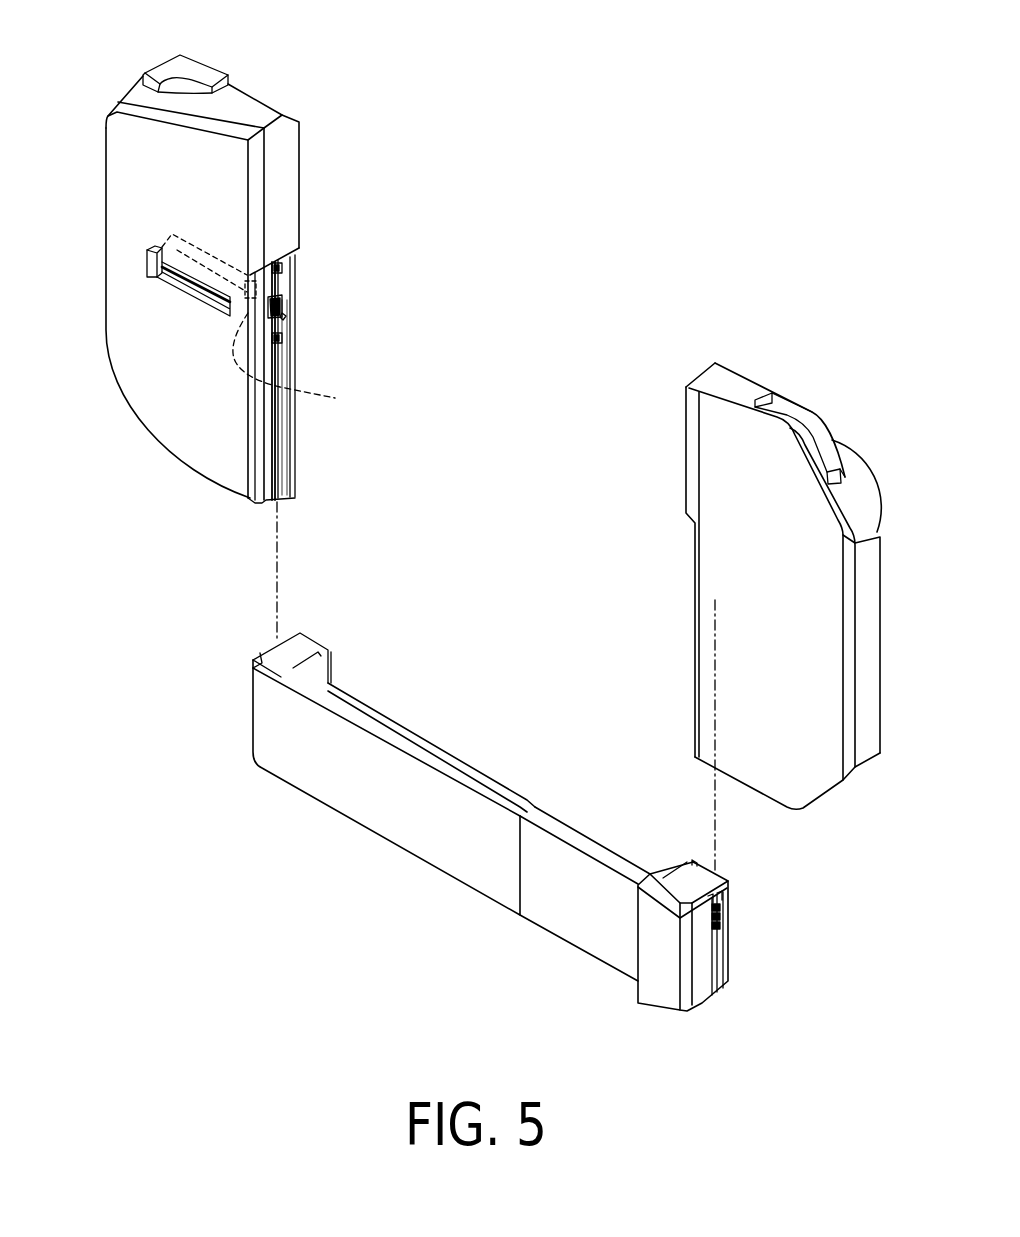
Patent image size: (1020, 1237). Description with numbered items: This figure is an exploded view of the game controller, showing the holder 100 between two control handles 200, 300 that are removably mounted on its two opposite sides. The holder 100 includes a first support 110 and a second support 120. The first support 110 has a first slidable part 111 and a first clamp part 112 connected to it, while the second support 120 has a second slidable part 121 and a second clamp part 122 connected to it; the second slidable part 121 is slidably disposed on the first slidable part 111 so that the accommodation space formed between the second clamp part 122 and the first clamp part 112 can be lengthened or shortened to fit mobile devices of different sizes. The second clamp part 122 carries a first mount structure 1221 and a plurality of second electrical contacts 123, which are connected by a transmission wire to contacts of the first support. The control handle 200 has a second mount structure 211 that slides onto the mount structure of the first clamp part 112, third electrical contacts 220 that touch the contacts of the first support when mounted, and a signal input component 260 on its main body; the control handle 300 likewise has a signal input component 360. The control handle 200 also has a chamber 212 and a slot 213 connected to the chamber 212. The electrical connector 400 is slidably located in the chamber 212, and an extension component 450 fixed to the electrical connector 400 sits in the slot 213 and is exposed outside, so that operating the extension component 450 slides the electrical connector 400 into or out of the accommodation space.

The holder 100 is at (668, 683).
The first support 110 is at (354, 745).
The first slidable part 111 is at (365, 800).
The first clamp part 112 is at (300, 647).
The second support 120 is at (666, 855).
The second slidable part 121 is at (580, 918).
The second clamp part 122 is at (694, 951).
The first mount structure 1221 is at (730, 973).
The second electrical contacts 123 is at (728, 903).
The control handle 200 is at (252, 80).
The second mount structure 211 is at (278, 502).
The chamber 212 is at (286, 303).
The slot 213 is at (183, 277).
The third electrical contacts 220 is at (283, 271).
The signal input component 260 is at (187, 62).
The control handle 300 is at (745, 367).
The signal input component 360 is at (813, 425).
The electrical connector 400 is at (304, 363).
The extension component 450 is at (147, 262).